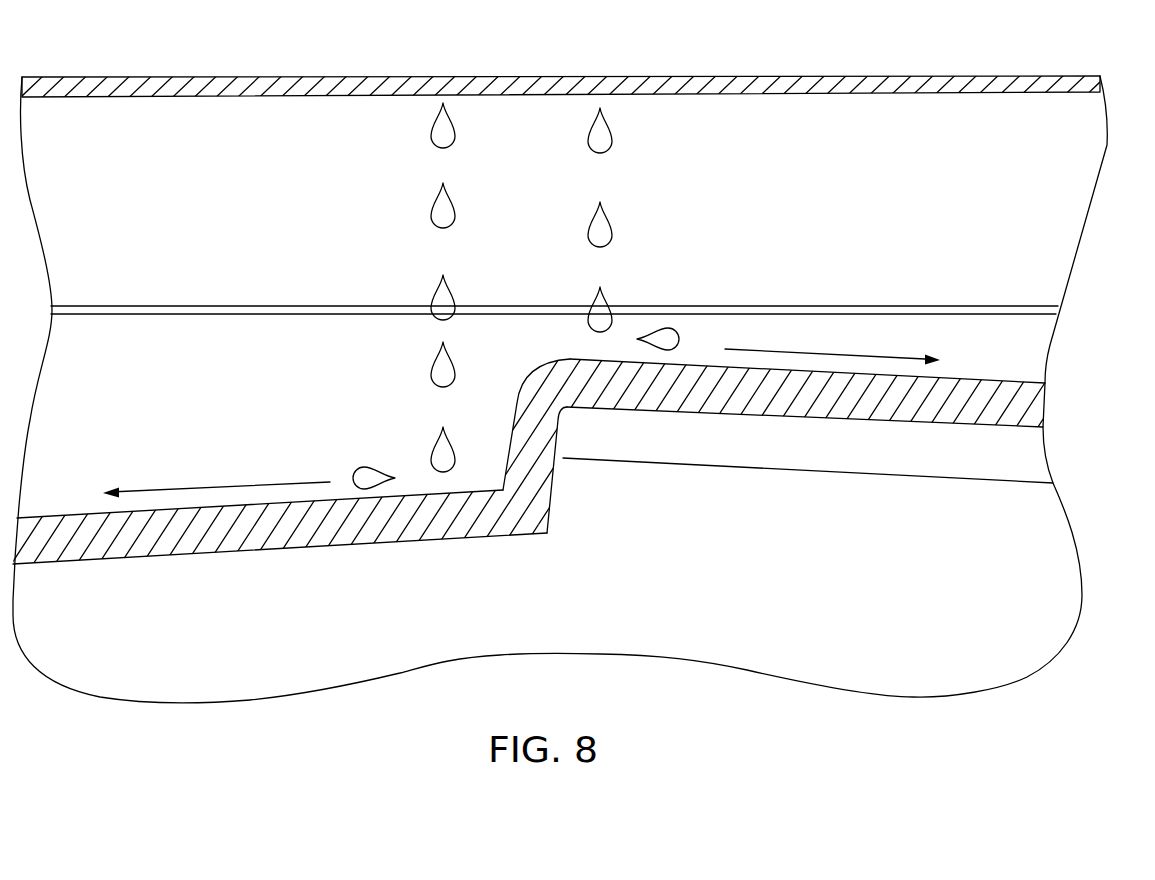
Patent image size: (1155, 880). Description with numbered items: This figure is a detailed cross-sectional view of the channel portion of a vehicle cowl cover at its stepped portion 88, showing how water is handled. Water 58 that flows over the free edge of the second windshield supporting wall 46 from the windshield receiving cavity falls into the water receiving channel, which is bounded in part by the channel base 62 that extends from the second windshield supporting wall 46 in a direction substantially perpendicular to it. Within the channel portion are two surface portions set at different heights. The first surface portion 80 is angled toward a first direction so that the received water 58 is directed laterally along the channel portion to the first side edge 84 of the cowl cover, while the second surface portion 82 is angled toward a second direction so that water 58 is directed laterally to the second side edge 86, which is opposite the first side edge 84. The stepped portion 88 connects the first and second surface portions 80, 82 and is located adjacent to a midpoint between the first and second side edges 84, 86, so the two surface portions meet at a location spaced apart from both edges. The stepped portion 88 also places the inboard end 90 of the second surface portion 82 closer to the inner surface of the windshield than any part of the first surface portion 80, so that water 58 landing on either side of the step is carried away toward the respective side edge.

The second windshield supporting wall 46 is at (645, 76).
The water 58 is at (440, 205).
The channel base 62 is at (1045, 169).
The first surface portion 80 is at (68, 518).
The second surface portion 82 is at (983, 377).
The first side edge 84 is at (286, 476).
The second side edge 86 is at (905, 348).
The stepped portion 88 is at (578, 440).
The inboard end 90 is at (588, 355).